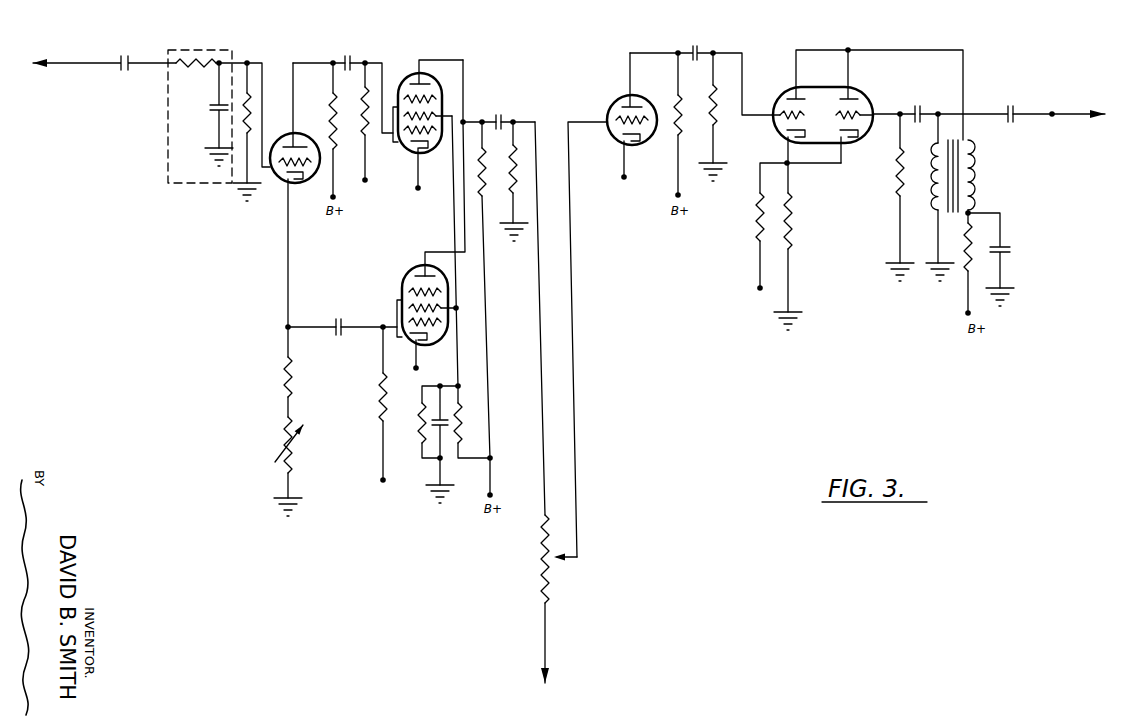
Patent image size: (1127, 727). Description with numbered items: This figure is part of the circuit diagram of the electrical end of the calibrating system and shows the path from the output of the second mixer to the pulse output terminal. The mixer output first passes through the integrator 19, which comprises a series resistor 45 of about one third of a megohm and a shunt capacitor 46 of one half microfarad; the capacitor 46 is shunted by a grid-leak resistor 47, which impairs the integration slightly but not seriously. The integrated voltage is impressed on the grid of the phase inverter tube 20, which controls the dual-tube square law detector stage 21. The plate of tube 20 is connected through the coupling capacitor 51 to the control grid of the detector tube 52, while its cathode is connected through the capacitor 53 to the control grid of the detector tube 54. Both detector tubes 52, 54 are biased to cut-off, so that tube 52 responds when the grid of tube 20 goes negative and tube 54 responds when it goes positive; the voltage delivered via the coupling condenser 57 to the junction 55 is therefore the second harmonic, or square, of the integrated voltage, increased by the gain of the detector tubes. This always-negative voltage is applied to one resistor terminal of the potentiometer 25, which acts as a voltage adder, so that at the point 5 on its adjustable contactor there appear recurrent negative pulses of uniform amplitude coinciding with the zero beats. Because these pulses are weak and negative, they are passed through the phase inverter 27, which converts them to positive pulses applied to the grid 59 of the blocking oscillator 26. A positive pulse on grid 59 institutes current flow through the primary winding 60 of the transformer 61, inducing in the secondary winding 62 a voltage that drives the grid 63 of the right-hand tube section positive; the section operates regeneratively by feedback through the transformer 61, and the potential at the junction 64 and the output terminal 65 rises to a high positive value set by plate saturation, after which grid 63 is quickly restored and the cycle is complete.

The point 5 is at (580, 555).
The integrator 19 is at (222, 48).
The phase inverter tube 20 is at (322, 131).
The dual-tube square law detector stage 21 is at (444, 109).
The potentiometer 25 is at (518, 589).
The blocking oscillator 26 is at (857, 91).
The phase inverter 27 is at (656, 49).
The series resistor 45 is at (199, 56).
The shunt capacitor 46 is at (213, 106).
The grid-leak resistor 47 is at (248, 93).
The coupling capacitor 51 is at (347, 53).
The detector tube 52 is at (441, 89).
The capacitor 53 is at (338, 342).
The detector tube 54 is at (413, 266).
The junction 55 is at (518, 121).
The coupling condenser 57 is at (500, 110).
The grid 59 is at (782, 108).
The primary winding 60 is at (968, 179).
The transformer 61 is at (969, 142).
The secondary winding 62 is at (938, 192).
The grid 63 is at (866, 106).
The junction 64 is at (938, 106).
The output terminal 65 is at (1057, 105).